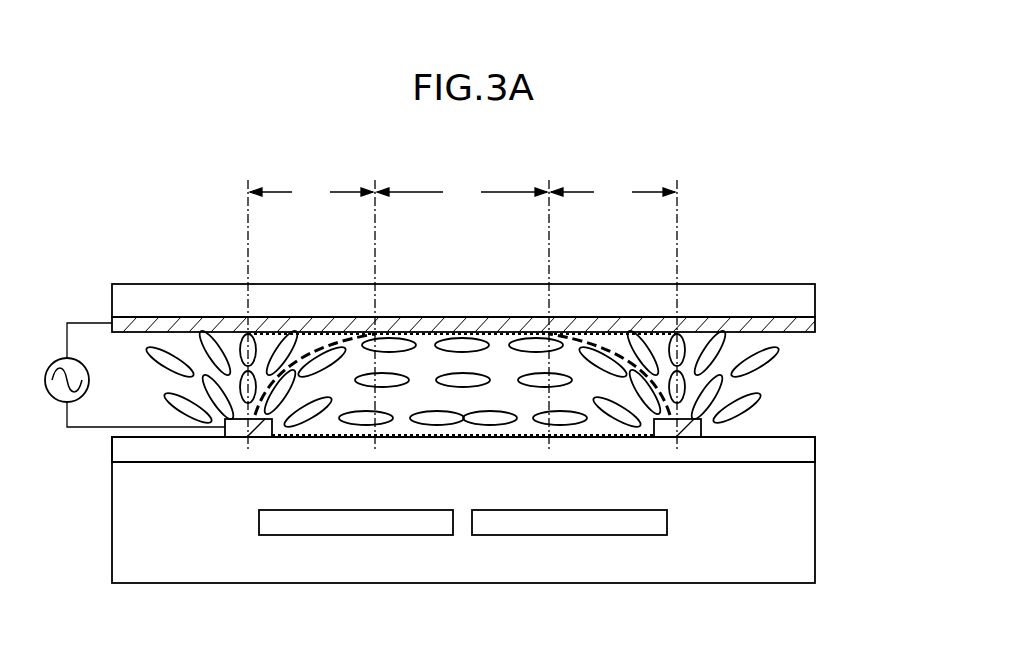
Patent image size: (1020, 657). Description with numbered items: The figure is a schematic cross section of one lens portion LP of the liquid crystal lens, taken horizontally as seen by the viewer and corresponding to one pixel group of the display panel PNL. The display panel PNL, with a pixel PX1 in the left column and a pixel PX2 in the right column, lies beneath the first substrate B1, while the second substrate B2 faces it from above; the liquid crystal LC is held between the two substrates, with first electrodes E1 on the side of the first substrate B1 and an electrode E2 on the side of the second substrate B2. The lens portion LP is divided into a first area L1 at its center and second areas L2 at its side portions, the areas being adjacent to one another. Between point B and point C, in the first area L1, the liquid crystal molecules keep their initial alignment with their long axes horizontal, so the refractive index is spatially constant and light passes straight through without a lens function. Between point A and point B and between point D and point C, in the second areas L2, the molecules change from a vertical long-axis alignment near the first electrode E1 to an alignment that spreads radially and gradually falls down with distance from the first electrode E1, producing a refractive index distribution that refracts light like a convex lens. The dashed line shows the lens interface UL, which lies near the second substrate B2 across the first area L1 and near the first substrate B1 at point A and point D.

The second substrate B2 is at (800, 301).
The second electrode (common electrode) E2 is at (800, 324).
The liquid crystal layer LC is at (800, 390).
The first substrate B1 is at (800, 450).
The display panel PNL is at (800, 522).
The pixel PX1 is at (356, 527).
The pixel PX2 is at (571, 527).
The first electrode E1 is at (692, 435).
The lens portion LP is at (300, 340).
The lens interface UL is at (603, 345).
The point A is at (248, 301).
The point B is at (375, 301).
The point C is at (549, 301).
The point D is at (677, 301).
The first area L1 is at (462, 193).
The second area L2 is at (462, 193).